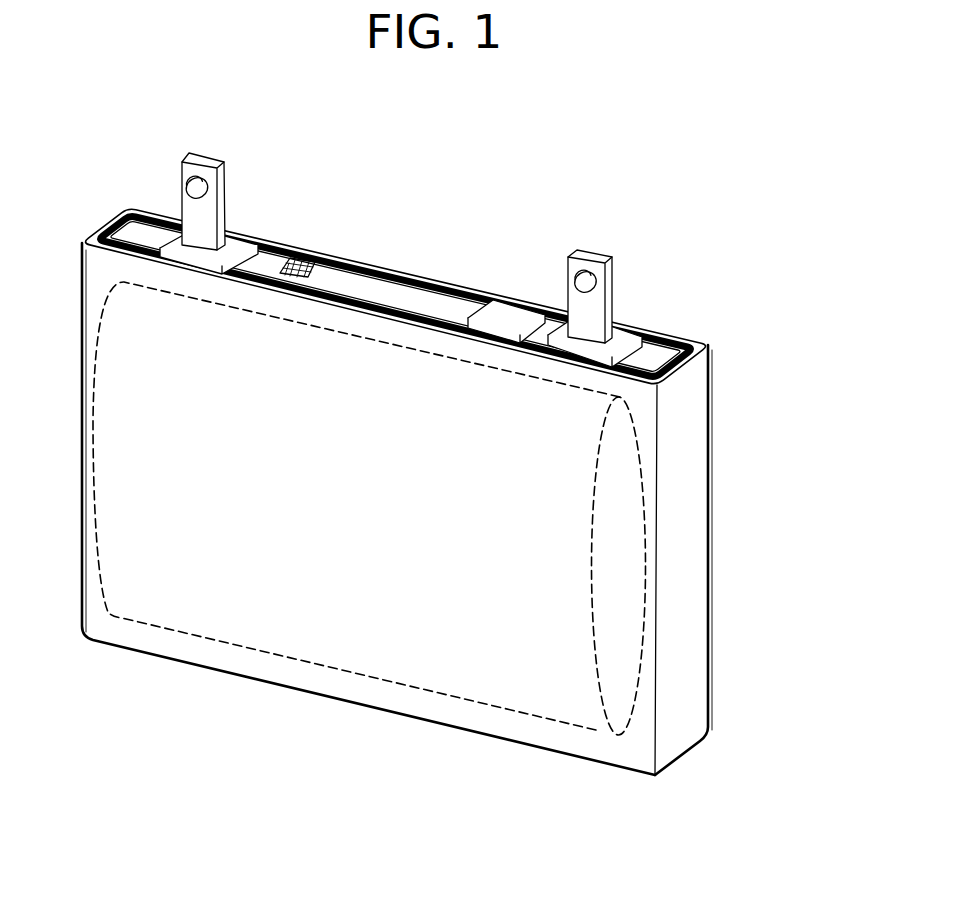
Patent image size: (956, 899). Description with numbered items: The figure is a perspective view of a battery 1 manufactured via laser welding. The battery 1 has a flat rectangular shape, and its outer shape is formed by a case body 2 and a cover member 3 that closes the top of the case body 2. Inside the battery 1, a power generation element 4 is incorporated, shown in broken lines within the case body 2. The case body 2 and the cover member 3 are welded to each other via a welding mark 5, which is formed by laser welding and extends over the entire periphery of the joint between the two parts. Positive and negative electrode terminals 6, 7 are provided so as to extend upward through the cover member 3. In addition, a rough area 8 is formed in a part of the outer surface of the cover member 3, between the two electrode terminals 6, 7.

The battery 1 is at (485, 206).
The case body 2 is at (697, 413).
The cover member 3 is at (358, 282).
The power generation element 4 is at (610, 555).
The welding mark 5 is at (675, 337).
The positive electrode terminal 6 is at (589, 297).
The negative electrode terminal 7 is at (182, 177).
The rough area 8 is at (308, 260).